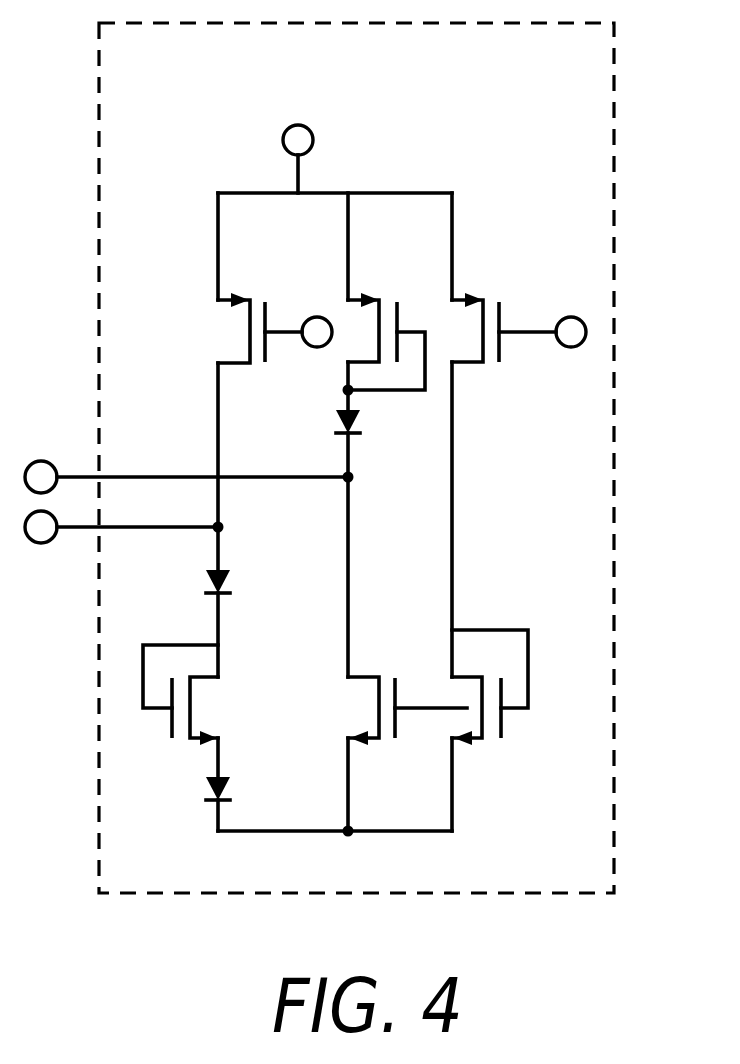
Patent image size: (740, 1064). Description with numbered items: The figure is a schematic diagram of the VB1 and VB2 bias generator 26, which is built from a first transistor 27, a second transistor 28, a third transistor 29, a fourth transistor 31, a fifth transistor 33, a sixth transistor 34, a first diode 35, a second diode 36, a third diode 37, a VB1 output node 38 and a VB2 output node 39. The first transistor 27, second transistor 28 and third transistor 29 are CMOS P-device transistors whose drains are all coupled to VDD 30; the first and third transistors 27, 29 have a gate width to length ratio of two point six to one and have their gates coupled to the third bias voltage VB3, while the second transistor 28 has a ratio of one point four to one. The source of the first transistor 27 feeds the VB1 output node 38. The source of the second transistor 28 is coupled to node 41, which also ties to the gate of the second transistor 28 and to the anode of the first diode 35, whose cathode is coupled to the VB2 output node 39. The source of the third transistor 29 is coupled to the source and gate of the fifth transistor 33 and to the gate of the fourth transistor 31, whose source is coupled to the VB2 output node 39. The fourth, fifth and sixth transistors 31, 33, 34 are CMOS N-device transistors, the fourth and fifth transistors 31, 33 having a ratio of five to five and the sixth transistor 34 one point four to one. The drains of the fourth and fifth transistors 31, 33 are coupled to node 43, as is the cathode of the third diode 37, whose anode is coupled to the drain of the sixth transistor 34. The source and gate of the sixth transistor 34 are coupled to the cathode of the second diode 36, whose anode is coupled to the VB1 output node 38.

The VB1 and VB2 bias generator 26 is at (616, 537).
The first transistor 27 is at (248, 349).
The second transistor 28 is at (398, 312).
The third transistor 29 is at (470, 366).
The VDD 30 is at (313, 135).
The fourth transistor 31 is at (371, 698).
The fifth transistor 33 is at (503, 740).
The sixth transistor 34 is at (219, 675).
The first diode 35 is at (335, 430).
The second diode 36 is at (232, 575).
The third diode 37 is at (232, 783).
The VB1 output node 38 is at (224, 525).
The VB2 output node 39 is at (352, 482).
The node 41 is at (340, 395).
The node 43 is at (355, 826).